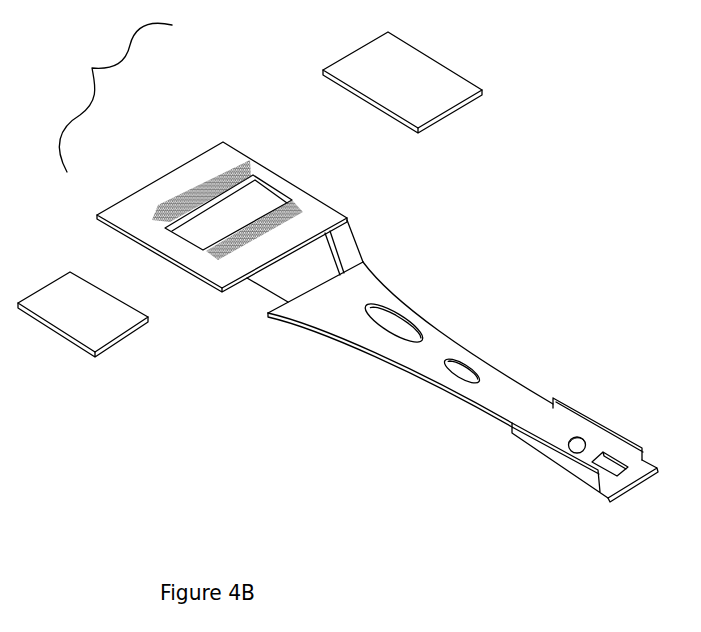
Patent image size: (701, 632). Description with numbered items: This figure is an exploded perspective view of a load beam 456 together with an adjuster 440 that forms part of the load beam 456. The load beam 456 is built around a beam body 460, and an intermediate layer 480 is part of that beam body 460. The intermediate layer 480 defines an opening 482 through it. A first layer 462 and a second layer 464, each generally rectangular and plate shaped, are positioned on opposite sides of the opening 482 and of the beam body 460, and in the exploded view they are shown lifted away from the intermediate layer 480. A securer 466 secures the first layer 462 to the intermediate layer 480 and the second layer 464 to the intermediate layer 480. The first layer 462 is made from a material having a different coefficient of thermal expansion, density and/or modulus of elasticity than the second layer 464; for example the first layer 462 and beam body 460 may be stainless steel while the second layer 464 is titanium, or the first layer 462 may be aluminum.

The adjuster 440 is at (109, 97).
The load beam 456 is at (510, 248).
The beam body 460 is at (377, 288).
The first layer 462 is at (80, 285).
The second layer 464 is at (323, 69).
The securer 466 is at (198, 200).
The intermediate layer 480 is at (207, 143).
The opening 482 is at (260, 202).